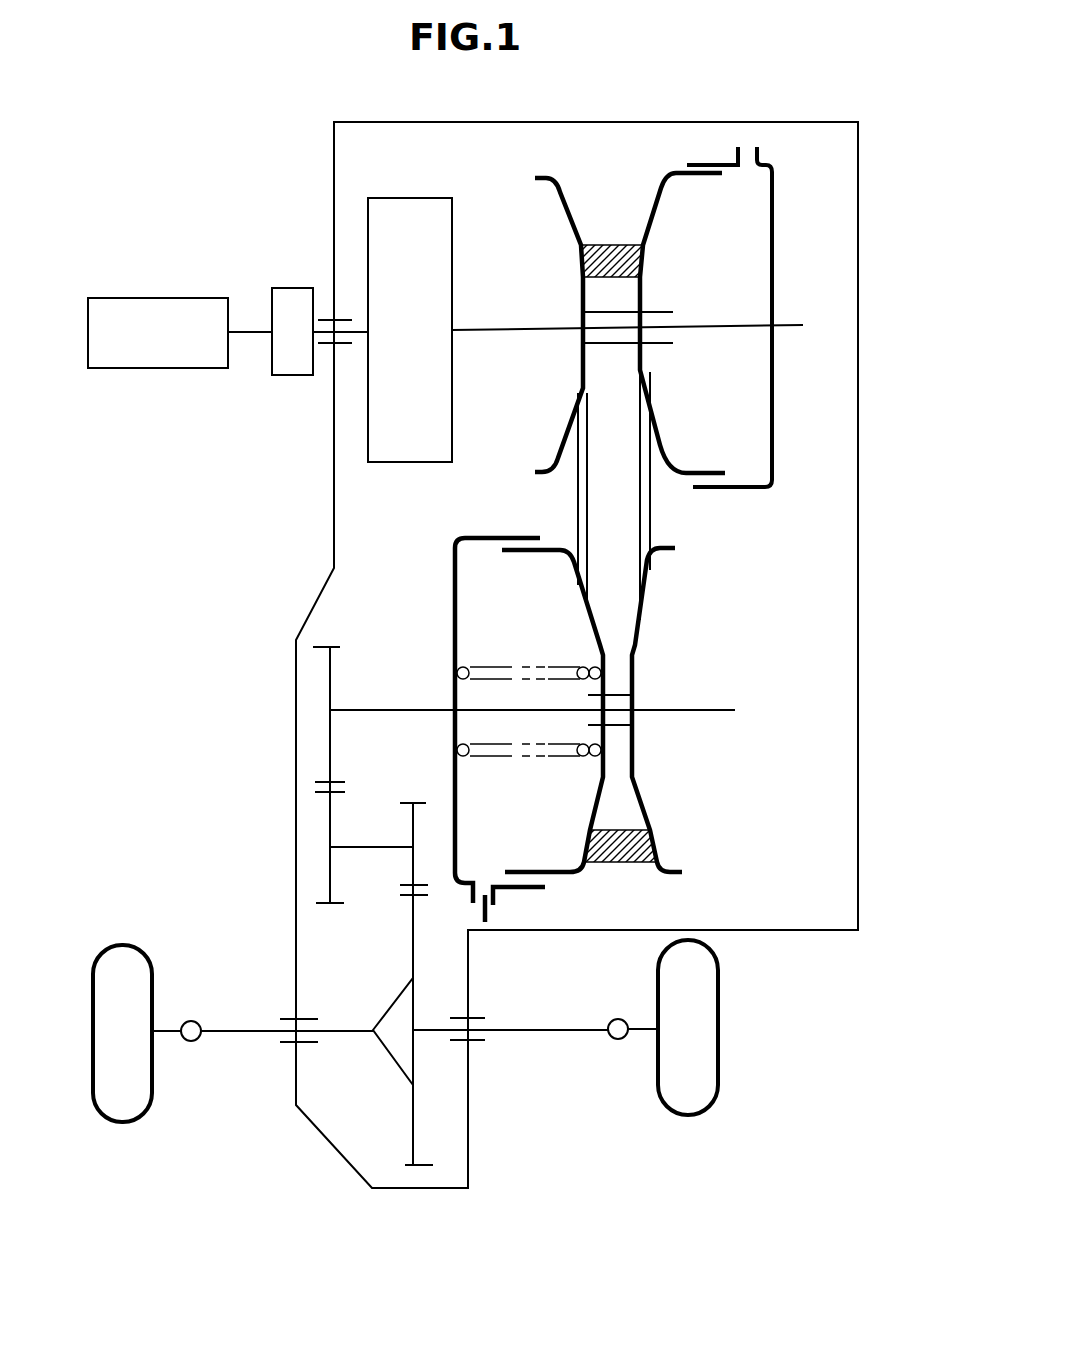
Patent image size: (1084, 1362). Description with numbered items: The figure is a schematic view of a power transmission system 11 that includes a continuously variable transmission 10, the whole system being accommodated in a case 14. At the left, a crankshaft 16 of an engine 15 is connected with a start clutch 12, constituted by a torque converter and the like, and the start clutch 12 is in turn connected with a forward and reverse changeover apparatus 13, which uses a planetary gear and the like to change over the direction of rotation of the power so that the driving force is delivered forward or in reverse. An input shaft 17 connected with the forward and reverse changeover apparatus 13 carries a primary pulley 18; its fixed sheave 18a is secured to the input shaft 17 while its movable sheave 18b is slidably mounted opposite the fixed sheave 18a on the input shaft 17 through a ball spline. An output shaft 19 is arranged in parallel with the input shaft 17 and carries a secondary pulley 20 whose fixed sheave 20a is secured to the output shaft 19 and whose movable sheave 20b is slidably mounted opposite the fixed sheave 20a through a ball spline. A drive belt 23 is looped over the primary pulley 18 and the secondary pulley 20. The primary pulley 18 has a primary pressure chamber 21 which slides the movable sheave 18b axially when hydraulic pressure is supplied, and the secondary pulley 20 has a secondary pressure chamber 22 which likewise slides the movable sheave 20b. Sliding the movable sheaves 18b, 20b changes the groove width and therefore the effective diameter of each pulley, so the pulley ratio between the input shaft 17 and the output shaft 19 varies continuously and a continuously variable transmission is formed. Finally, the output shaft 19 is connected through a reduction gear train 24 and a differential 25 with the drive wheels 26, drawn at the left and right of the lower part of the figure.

The continuously variable transmission 10 is at (710, 571).
The power transmission system 11 is at (403, 542).
The start clutch 12 is at (288, 288).
The forward and reverse changeover apparatus 13 is at (402, 200).
The case 14 is at (715, 122).
The engine 15 is at (157, 298).
The crankshaft 16 is at (248, 336).
The input shaft 17 is at (510, 335).
The primary pulley 18 is at (599, 317).
The fixed sheave 18a is at (556, 212).
The movable sheave 18b is at (658, 203).
The output shaft 19 is at (692, 708).
The secondary pulley 20 is at (626, 736).
The fixed sheave 20a is at (650, 813).
The movable sheave 20b is at (565, 872).
The primary pressure chamber 21 is at (760, 258).
The secondary pressure chamber 22 is at (455, 600).
The drive belt 23 is at (580, 505).
The reduction gear train 24 is at (378, 802).
The differential 25 is at (390, 1055).
The drive wheels 26 is at (122, 1110).